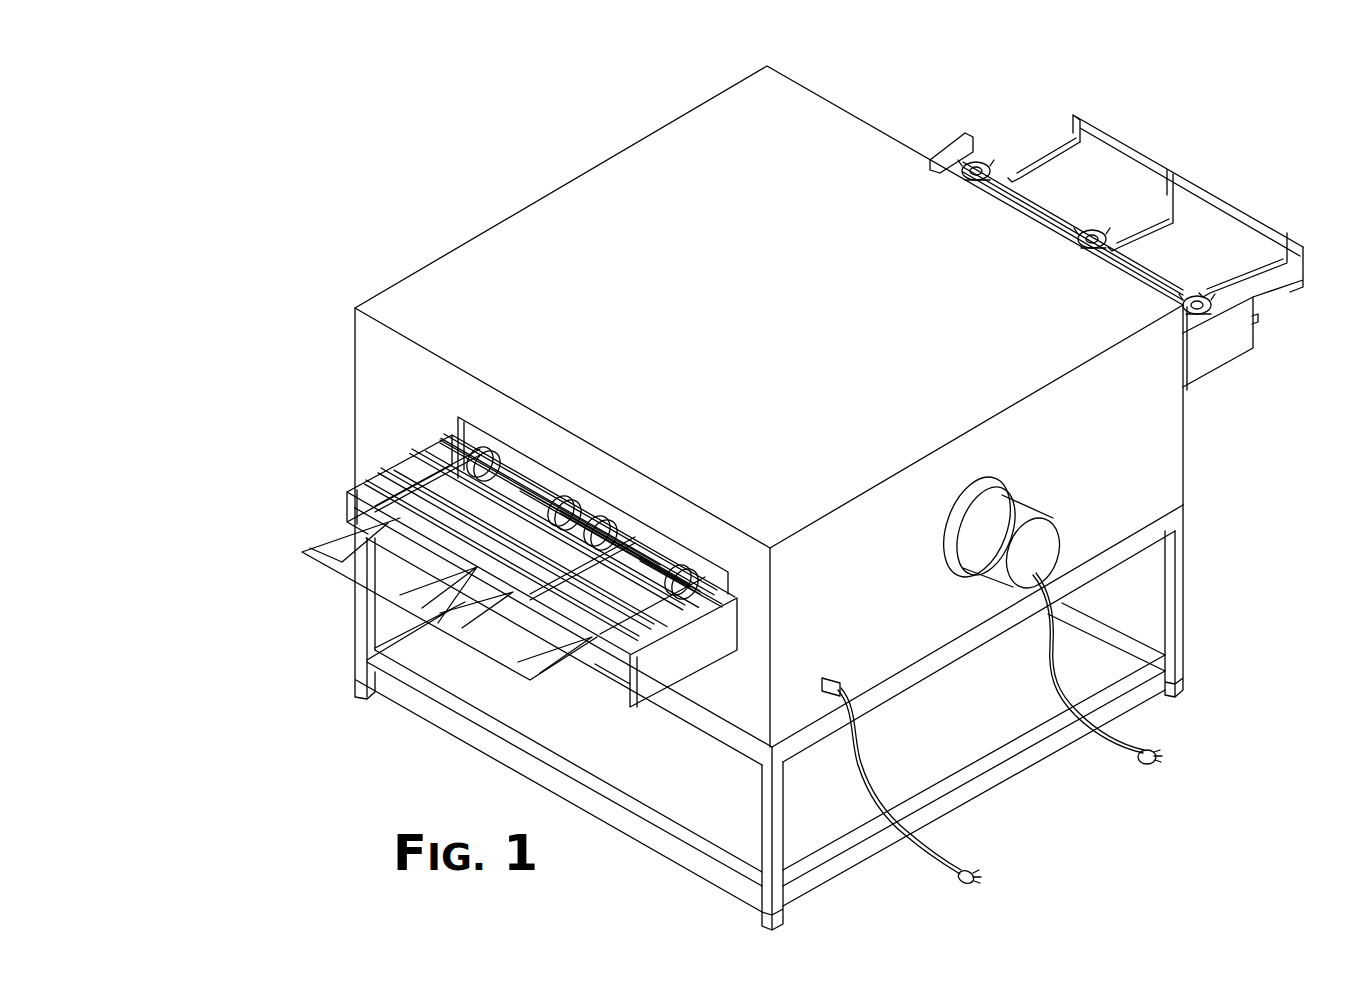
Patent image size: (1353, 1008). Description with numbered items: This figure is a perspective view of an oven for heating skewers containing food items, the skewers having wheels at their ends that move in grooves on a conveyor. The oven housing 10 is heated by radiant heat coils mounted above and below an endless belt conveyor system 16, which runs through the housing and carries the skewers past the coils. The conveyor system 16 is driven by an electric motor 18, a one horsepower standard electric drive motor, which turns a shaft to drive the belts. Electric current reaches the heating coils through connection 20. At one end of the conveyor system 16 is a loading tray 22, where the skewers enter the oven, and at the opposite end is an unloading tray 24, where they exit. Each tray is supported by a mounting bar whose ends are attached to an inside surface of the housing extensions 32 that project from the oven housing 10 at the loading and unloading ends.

The oven housing 10 is at (668, 382).
The endless belt conveyor system 16 is at (417, 470).
The electric motor 18 is at (1063, 537).
The connection 20 is at (862, 695).
The loading tray 22 is at (333, 568).
The unloading tray 24 is at (1240, 210).
The housing extensions 32 is at (370, 477).